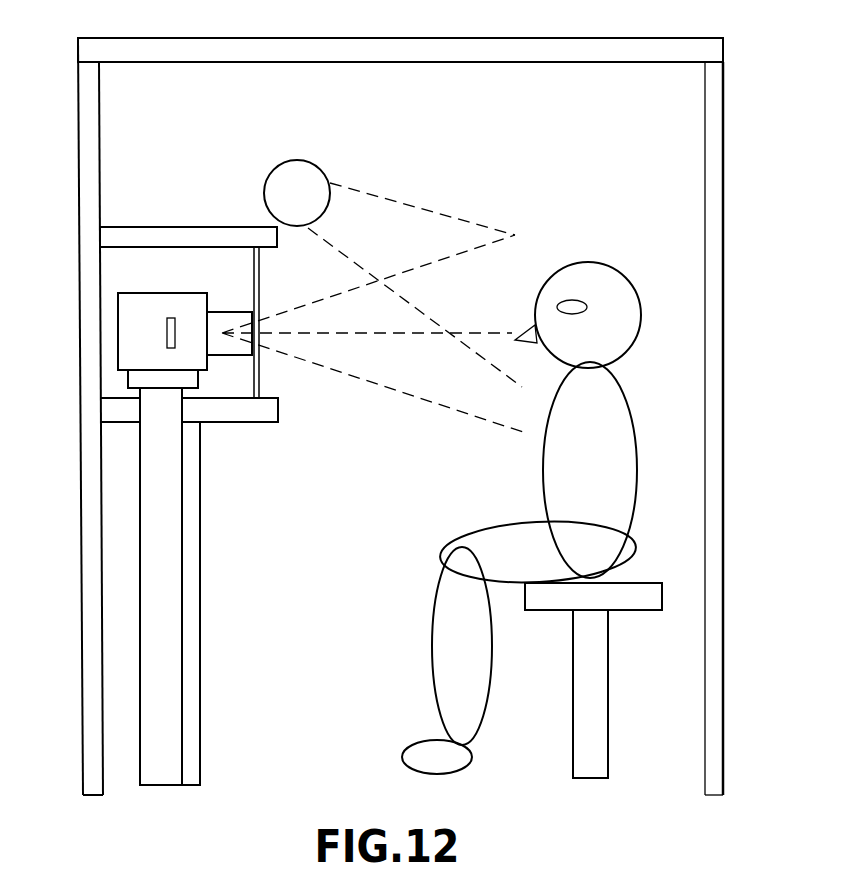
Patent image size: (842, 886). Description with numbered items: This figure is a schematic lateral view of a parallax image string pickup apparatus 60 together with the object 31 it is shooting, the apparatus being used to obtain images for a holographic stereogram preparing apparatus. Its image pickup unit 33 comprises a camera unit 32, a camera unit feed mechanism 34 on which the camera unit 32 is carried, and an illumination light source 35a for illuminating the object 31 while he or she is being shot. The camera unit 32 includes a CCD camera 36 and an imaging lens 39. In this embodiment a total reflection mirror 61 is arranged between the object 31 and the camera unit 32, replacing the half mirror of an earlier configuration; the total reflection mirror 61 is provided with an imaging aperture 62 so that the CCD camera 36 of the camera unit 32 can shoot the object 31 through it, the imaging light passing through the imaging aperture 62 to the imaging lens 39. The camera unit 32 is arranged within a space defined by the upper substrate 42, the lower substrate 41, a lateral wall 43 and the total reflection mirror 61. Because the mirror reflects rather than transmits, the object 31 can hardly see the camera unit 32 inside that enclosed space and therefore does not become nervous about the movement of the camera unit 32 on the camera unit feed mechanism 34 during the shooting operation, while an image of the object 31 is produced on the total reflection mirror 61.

The parallax image string pickup apparatus 60 is at (476, 35).
The lateral wall 43 is at (97, 295).
The upper substrate 42 is at (125, 230).
The lower substrate 41 is at (120, 412).
The total reflection mirror 61 is at (260, 377).
The CCD camera 36 is at (165, 307).
The imaging lens 39 is at (225, 317).
The camera unit 32 is at (218, 385).
The camera unit feed mechanism 34 is at (170, 382).
The imaging aperture 62 is at (274, 320).
The illumination light source 35a is at (300, 173).
The object 31 is at (615, 432).
The image pickup unit 33 is at (310, 425).